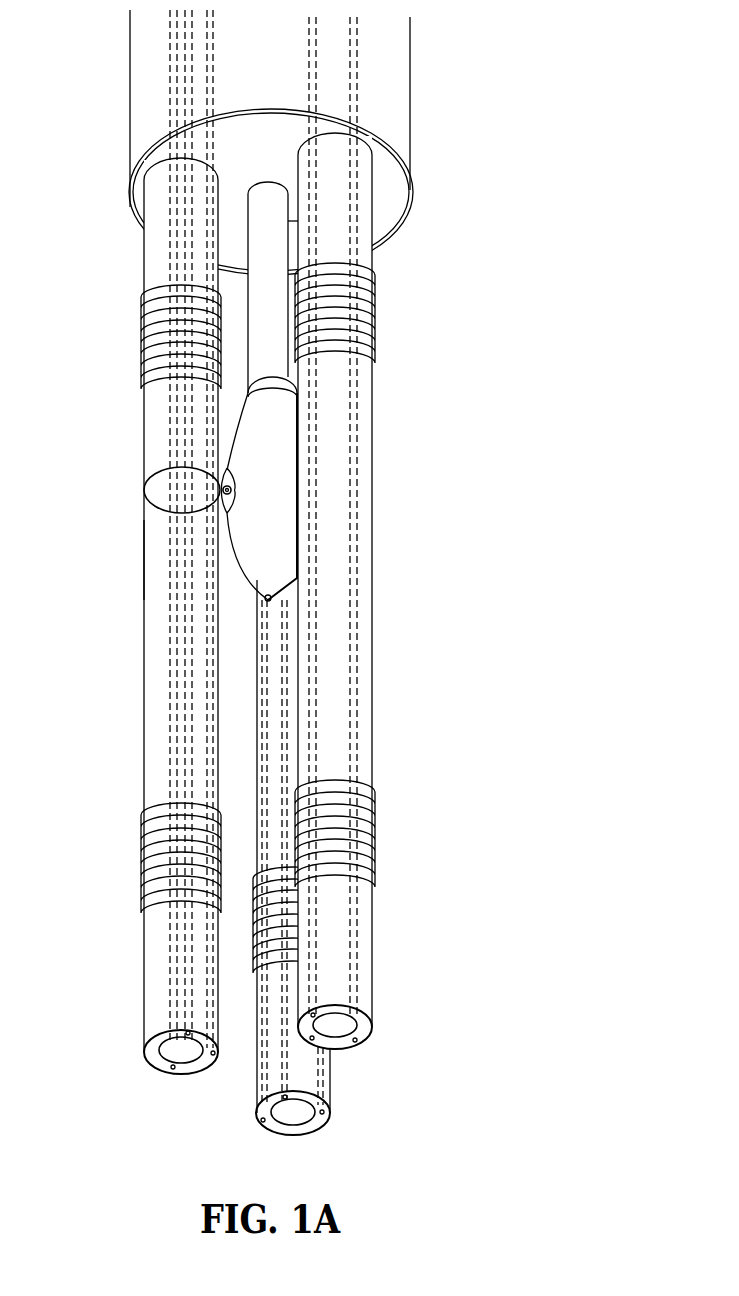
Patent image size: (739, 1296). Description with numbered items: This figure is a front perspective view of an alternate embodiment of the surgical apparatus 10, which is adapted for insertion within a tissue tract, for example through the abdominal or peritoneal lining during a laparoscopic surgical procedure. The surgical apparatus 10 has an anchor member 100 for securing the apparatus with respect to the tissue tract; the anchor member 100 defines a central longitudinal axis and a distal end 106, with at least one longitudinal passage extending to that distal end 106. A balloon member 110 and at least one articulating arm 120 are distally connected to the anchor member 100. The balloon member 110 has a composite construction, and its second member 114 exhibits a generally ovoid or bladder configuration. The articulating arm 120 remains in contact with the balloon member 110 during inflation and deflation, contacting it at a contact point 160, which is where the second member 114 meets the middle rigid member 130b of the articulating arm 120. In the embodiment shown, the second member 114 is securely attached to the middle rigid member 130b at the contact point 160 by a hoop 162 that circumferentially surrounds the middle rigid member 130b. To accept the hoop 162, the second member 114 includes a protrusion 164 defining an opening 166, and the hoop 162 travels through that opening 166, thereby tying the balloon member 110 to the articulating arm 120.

The surgical apparatus 10 is at (522, 120).
The anchor member 100 is at (157, 73).
The distal end 106 is at (387, 203).
The balloon member 110 is at (265, 293).
The second member 114 is at (252, 548).
The articulating arm 120 is at (170, 414).
The middle rigid member 130b is at (157, 523).
The contact point 160 is at (229, 471).
The hoop 162 is at (145, 507).
The protrusion 164 is at (227, 502).
The opening 166 is at (229, 478).